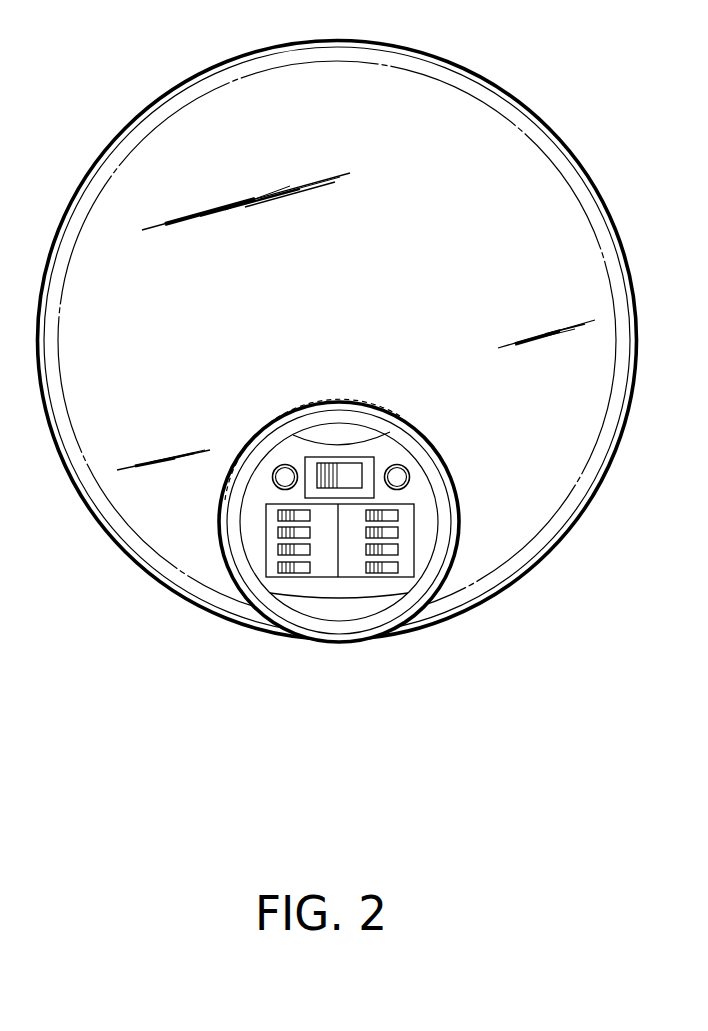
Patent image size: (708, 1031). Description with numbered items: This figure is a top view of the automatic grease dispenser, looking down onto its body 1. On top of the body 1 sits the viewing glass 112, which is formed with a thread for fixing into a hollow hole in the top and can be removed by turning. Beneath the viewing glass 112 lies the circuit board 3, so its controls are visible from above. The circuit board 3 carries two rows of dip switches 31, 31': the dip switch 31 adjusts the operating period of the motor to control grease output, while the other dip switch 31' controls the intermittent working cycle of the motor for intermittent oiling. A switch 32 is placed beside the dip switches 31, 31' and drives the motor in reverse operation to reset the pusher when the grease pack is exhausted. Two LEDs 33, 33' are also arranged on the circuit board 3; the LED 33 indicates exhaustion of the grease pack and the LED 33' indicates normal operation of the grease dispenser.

The body 1 is at (485, 97).
The circuit board 3 is at (427, 517).
The dip switch 31 is at (283, 614).
The dip switch 31' is at (400, 625).
The switch 32 is at (316, 458).
The LED 33 is at (227, 434).
The LED 33' is at (449, 444).
The viewing glass 112 is at (363, 425).